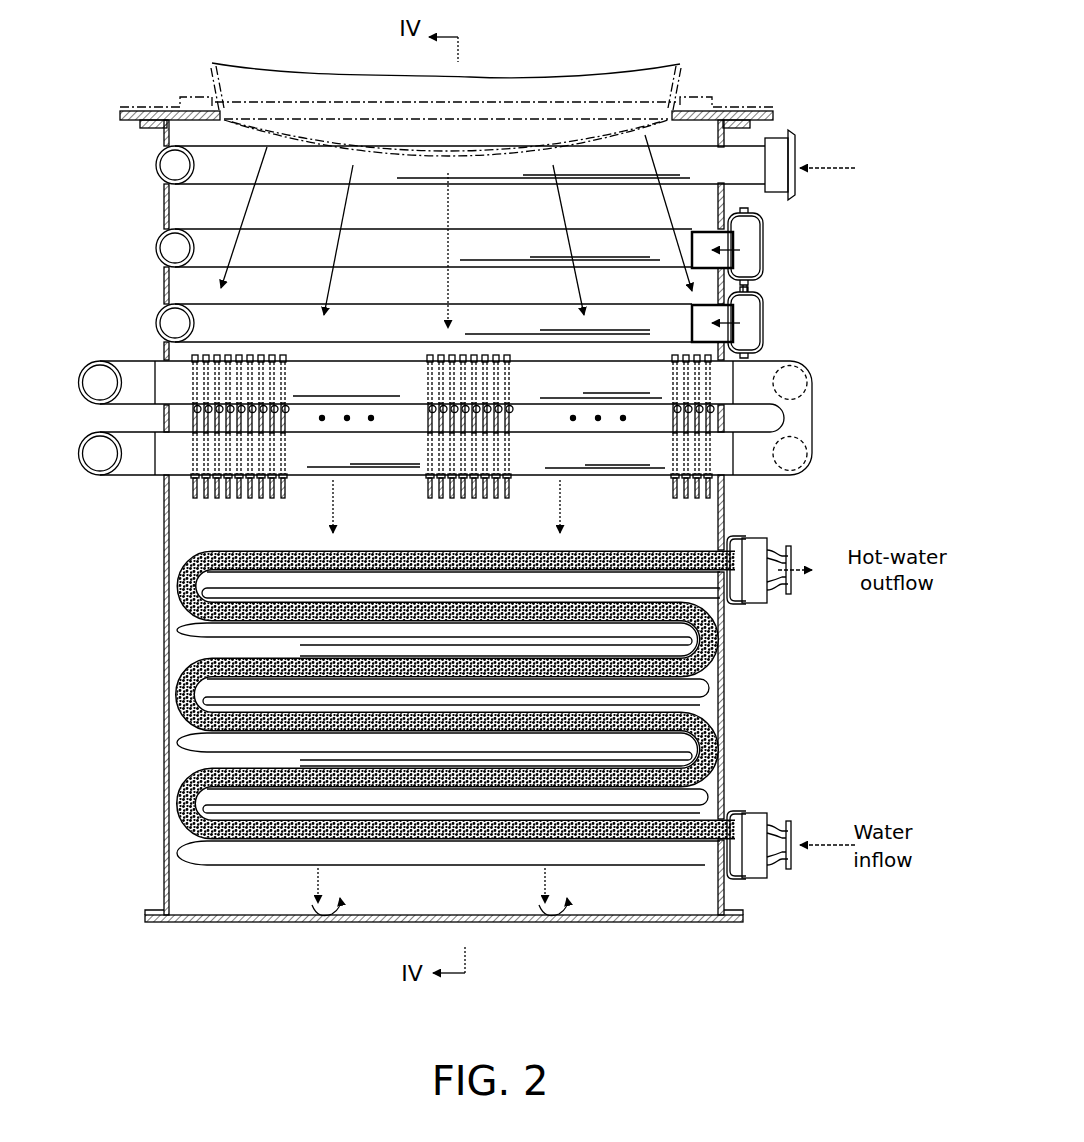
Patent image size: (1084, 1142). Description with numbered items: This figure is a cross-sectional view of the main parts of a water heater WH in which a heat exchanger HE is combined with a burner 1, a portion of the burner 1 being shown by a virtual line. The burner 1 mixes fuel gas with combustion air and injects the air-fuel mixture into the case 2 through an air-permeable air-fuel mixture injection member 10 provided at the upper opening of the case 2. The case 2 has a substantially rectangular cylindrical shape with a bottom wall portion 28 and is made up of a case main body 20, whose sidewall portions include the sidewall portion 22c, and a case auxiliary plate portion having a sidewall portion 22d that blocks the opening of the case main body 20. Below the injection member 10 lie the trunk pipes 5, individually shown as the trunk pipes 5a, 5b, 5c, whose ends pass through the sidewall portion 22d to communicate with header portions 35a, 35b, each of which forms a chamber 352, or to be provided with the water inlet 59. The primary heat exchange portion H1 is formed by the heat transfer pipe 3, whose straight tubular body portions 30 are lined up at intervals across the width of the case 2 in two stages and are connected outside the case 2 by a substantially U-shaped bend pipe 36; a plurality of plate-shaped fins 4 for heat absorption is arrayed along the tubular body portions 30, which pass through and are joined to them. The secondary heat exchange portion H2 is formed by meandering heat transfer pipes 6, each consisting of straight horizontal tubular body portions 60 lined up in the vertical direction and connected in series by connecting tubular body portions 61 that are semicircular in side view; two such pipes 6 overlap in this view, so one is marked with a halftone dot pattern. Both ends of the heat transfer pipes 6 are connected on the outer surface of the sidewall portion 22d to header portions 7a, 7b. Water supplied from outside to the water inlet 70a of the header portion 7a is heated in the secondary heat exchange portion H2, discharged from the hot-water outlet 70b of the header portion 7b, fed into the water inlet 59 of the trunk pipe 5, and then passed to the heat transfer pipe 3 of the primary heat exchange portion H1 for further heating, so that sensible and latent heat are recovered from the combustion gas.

The burner 1 is at (192, 96).
The case 2 is at (439, 547).
The heat transfer pipe 3 is at (466, 406).
The fins 4 is at (223, 352).
The trunk pipes 5 is at (460, 244).
The trunk pipe 5a is at (268, 172).
The trunk pipe 5b is at (363, 242).
The trunk pipe 5c is at (362, 316).
The heat transfer pipes 6 is at (441, 686).
The header portion 7a is at (757, 815).
The header portion 7b is at (752, 541).
The air-fuel mixture injection member 10 is at (491, 152).
The case main body 20 is at (160, 287).
The sidewall portion 22c is at (162, 752).
The sidewall portion 22d is at (727, 675).
The bottom wall portion 28 is at (283, 923).
The tubular body portions 30 is at (622, 390).
The header portion 35a is at (766, 237).
The header portion 35b is at (785, 321).
The chamber 352 is at (750, 323).
The bend pipe 36 is at (466, 424).
The water inlet 59 is at (796, 180).
The tubular body portions 60 is at (375, 612).
The connecting tubular body portions 61 is at (186, 587).
The water inlet 70a is at (790, 852).
The hot-water outlet 70b is at (790, 579).
The heat exchanger HE is at (488, 328).
The water heater WH is at (510, 123).
The primary heat exchange portion H1 is at (302, 350).
The secondary heat exchange portion H2 is at (186, 536).